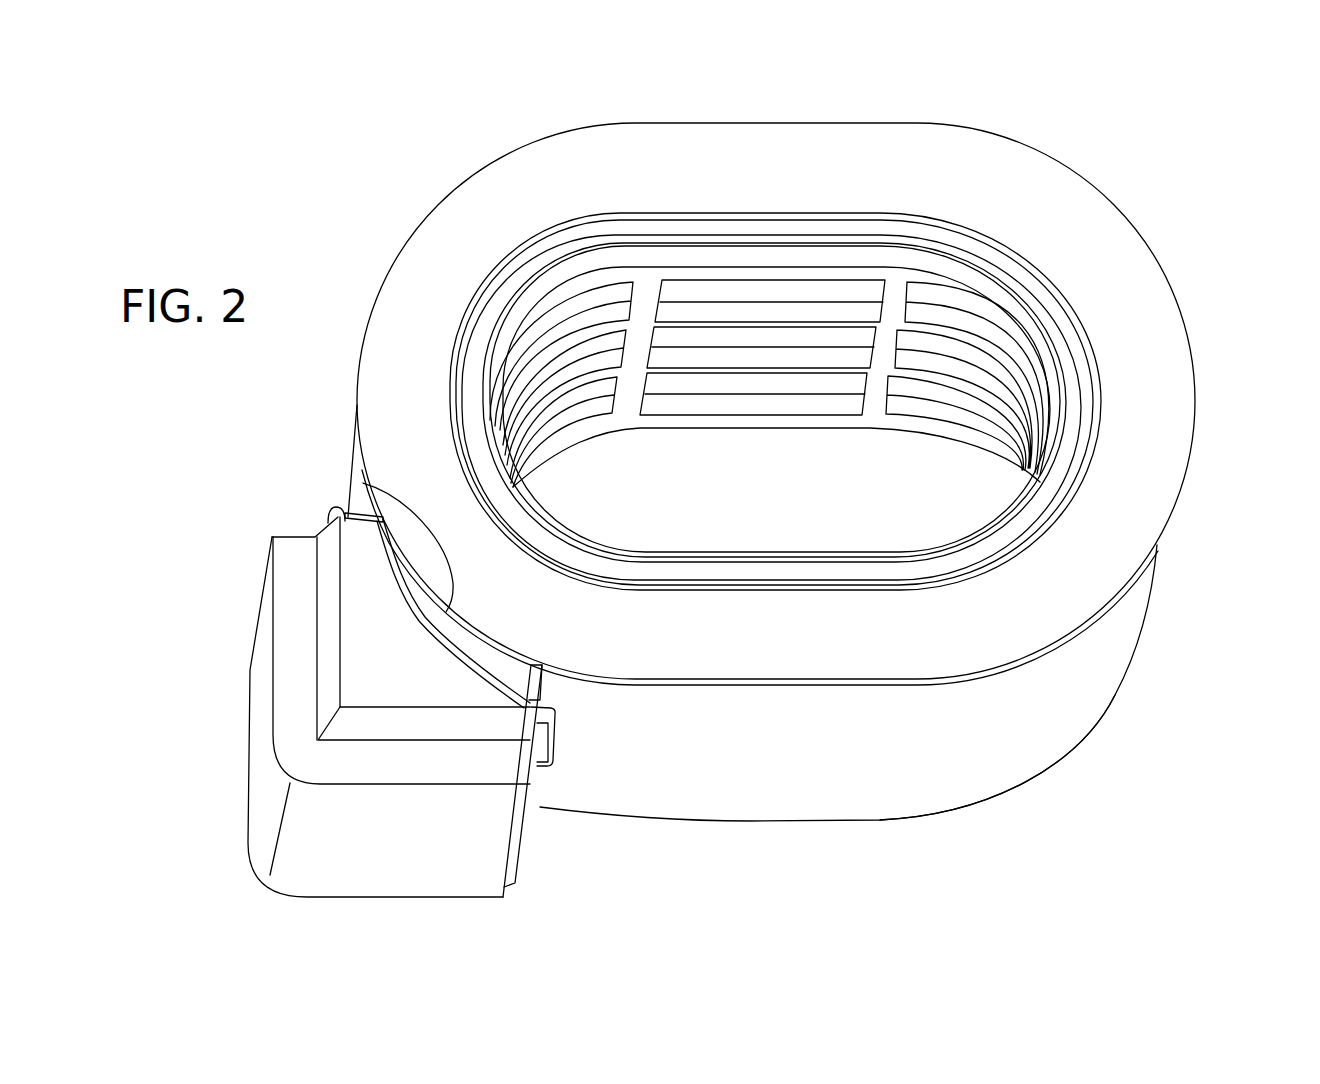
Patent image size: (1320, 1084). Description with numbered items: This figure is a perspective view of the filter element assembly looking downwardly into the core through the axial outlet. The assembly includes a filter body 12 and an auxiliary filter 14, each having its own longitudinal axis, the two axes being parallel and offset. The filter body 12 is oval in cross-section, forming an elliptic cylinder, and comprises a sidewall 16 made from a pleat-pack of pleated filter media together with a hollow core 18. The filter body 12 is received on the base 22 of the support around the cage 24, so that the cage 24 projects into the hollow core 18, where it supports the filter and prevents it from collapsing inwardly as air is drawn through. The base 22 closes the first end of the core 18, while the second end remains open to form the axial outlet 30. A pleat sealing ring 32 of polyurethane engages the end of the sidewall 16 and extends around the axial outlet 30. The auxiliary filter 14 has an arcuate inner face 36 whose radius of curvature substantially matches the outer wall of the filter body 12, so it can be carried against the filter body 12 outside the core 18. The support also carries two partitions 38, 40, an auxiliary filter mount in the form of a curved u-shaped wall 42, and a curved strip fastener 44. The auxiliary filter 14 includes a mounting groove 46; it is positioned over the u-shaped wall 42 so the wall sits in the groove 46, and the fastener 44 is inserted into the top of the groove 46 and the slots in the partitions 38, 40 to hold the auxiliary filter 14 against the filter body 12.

The filter body 12 is at (1113, 700).
The auxiliary filter 14 is at (255, 808).
The sidewall 16 is at (965, 759).
The hollow core 18 is at (1015, 319).
The base 22 is at (597, 490).
The cage 24 is at (718, 315).
The axial outlet 30 is at (829, 552).
The pleat sealing ring 32 is at (1163, 325).
The inner face 36 is at (363, 483).
The partition 38 is at (375, 521).
The partition 40 is at (540, 690).
The u-shaped wall 42 is at (523, 865).
The strip fastener 44 is at (553, 740).
The mounting groove 46 is at (412, 620).